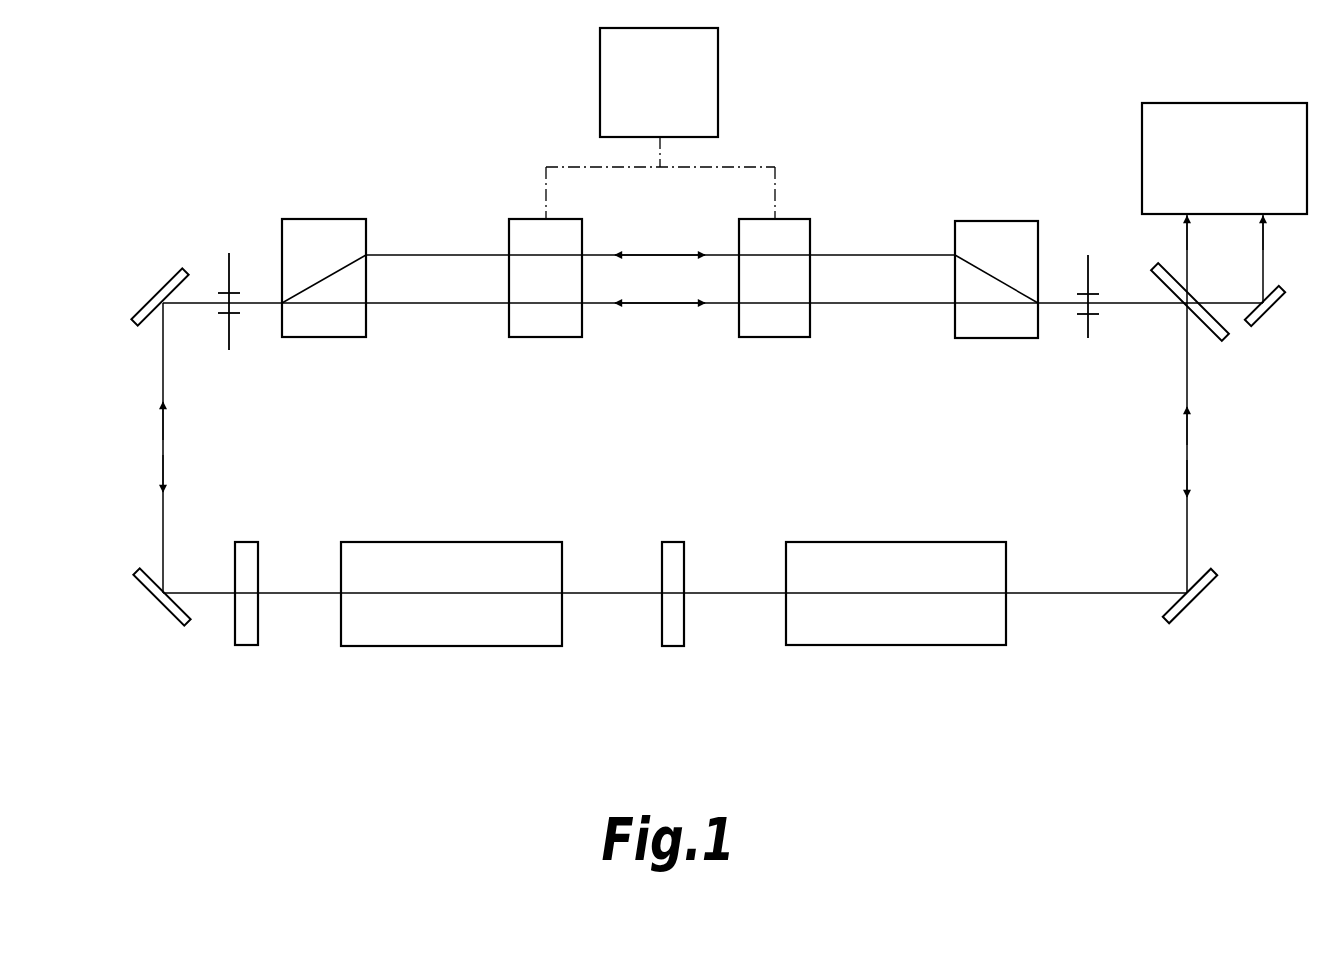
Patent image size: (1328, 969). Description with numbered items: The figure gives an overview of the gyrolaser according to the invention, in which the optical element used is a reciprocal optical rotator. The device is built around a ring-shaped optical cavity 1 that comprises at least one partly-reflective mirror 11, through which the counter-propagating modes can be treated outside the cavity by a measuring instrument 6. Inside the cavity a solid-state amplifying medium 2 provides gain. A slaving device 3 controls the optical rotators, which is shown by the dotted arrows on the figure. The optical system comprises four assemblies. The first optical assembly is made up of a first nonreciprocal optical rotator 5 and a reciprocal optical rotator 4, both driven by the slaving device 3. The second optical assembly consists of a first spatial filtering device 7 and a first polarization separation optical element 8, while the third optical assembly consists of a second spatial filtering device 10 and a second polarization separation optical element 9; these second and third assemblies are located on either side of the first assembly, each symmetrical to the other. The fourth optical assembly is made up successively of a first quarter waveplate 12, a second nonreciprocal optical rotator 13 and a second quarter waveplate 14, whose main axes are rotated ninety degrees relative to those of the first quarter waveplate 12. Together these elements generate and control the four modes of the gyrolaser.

The ring-shaped optical cavity 1 is at (1231, 446).
The solid-state amplifying medium 2 is at (883, 645).
The slaving device 3 is at (571, 81).
The reciprocal optical rotator 4 is at (548, 338).
The first nonreciprocal optical rotator 5 is at (778, 338).
The measuring instrument 6 is at (1142, 162).
The first spatial filtering device 7 is at (229, 350).
The first polarization separation optical element 8 is at (333, 338).
The second polarization separation optical element 9 is at (999, 338).
The second spatial filtering device 10 is at (1088, 338).
The partly-reflective mirror 11 is at (1223, 336).
The first quarter waveplate 12 is at (243, 645).
The second nonreciprocal optical rotator 13 is at (450, 646).
The second quarter waveplate 14 is at (674, 646).